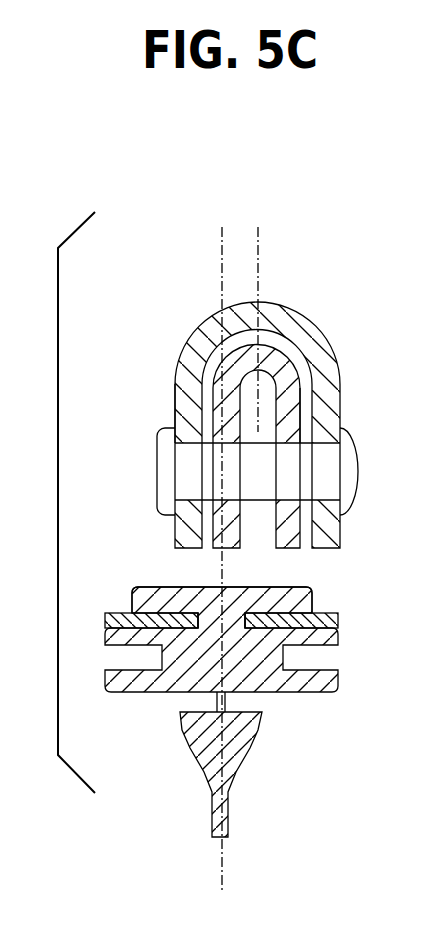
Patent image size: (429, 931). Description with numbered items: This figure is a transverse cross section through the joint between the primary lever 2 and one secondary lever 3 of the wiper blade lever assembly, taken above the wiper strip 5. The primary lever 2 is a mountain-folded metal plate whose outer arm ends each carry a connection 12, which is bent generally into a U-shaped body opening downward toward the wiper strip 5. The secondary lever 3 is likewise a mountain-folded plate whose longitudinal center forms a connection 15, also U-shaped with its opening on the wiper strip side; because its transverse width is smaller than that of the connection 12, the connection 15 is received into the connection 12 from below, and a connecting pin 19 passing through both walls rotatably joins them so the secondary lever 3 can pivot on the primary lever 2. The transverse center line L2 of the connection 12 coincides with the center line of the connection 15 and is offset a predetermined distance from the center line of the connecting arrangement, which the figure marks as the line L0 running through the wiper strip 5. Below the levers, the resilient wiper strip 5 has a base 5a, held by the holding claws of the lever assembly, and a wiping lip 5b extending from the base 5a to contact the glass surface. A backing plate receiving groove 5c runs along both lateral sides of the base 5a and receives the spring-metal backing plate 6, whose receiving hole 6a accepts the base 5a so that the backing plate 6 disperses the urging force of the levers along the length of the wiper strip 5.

The primary lever 2 is at (285, 306).
The secondary lever 3 is at (300, 358).
The connection 12 is at (183, 358).
The connection 15 is at (292, 407).
The connecting pin 19 is at (158, 455).
The wiper strip 5 is at (293, 587).
The base 5a is at (135, 587).
The wiping lip 5b is at (237, 762).
The backing plate receiving groove 5c is at (262, 615).
The backing plate 6 is at (338, 615).
The receiving hole 6a is at (200, 612).
The center line L2 is at (259, 257).
The axis of pin L0 is at (222, 862).